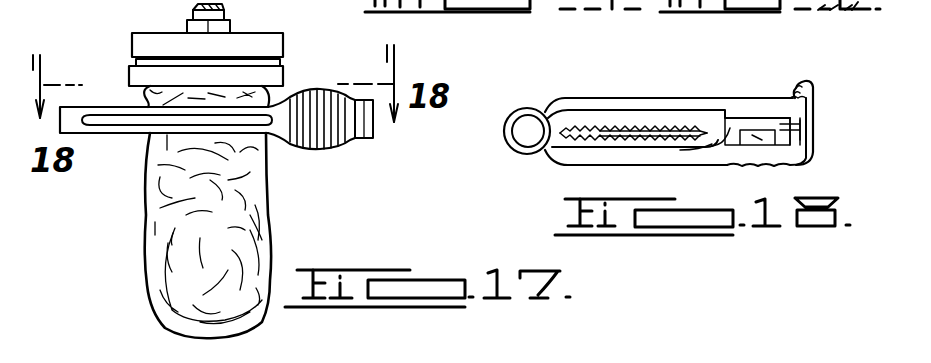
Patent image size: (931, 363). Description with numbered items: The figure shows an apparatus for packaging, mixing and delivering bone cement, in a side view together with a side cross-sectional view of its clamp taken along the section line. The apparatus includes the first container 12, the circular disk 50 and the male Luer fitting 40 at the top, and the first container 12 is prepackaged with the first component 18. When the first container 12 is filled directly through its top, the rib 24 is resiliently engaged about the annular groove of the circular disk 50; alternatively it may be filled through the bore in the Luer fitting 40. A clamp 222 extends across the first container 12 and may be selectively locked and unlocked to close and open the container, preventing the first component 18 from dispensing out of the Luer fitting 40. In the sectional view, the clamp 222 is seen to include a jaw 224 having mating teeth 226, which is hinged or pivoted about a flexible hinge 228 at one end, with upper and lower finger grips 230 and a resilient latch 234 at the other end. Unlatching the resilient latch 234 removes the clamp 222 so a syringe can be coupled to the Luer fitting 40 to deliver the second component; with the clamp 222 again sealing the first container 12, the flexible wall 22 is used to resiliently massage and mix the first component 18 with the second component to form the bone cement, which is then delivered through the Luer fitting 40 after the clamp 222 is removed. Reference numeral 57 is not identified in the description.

In FIG. 17, the first container 12 is at (268, 218).
In FIG. 17, the first component 18 is at (172, 260).
In FIG. 17, the flexible wall 22 is at (146, 211).
In FIG. 17, the rib 24 is at (282, 63).
In FIG. 17, the male Luer fitting 40 is at (226, 14).
In FIG. 17, the circular disk 50 is at (146, 33).
In FIG. 17, the gasket 57 is at (136, 63).
In FIG. 17, the clamp 222 is at (338, 147).
In FIG. 18, the jaw 224 is at (700, 140).
In FIG. 18, the mating teeth 226 is at (590, 126).
In FIG. 18, the flexible hinge 228 is at (520, 160).
In FIG. 18, the upper and lower finger grips 230 is at (756, 99).
In FIG. 18, the resilient latch 234 is at (813, 88).